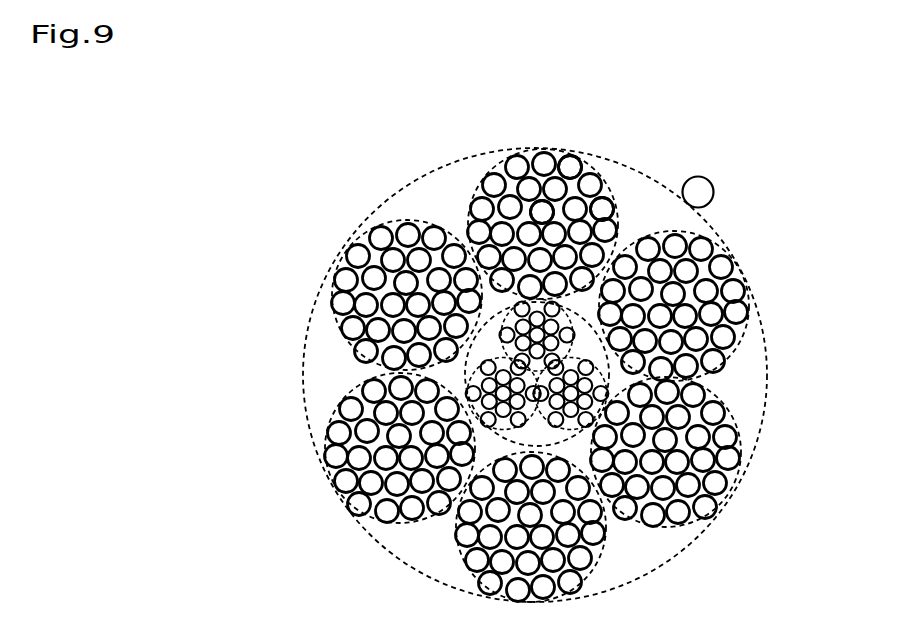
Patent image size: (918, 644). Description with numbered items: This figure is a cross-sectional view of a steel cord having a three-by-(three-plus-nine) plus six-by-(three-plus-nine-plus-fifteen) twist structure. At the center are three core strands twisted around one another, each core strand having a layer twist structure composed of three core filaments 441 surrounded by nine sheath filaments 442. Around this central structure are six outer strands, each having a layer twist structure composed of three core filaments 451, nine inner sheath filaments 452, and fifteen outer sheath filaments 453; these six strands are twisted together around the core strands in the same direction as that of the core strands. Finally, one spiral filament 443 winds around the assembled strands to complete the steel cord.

The core filament 441 is at (572, 392).
The sheath filament 442 is at (587, 423).
The spiral filament 443 is at (698, 192).
The core filament 451 is at (566, 166).
The inner sheath filament 452 is at (542, 208).
The outer sheath filament 453 is at (605, 205).